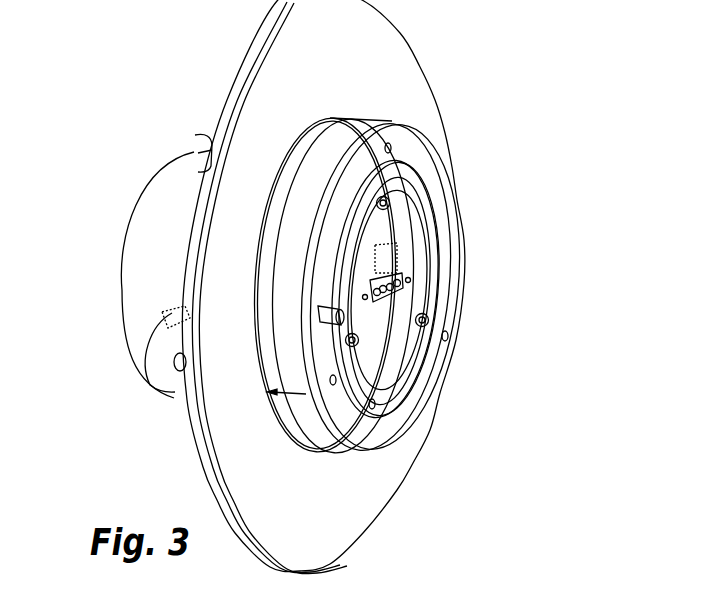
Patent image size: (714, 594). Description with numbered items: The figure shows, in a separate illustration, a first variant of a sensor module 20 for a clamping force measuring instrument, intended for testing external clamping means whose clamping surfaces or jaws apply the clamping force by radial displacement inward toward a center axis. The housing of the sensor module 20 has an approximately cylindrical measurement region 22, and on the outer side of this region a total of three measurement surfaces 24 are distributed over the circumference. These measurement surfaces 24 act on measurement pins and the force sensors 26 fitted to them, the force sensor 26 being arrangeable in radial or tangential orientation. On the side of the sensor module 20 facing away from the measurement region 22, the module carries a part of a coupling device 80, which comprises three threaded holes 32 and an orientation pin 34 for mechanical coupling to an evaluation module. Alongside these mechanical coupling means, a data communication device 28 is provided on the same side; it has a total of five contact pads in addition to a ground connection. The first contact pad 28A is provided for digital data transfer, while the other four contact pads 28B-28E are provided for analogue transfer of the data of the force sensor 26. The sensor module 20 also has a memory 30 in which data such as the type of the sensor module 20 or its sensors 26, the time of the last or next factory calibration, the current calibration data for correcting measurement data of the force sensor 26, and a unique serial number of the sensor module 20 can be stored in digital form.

The sensor module 20 is at (448, 50).
The measurement region 22 is at (166, 210).
The measurement surfaces 24 is at (197, 140).
The force sensor 26 is at (168, 322).
The data communication device 28 is at (410, 265).
The first contact pad 28A is at (410, 282).
The contact pads 28B-28E is at (402, 298).
The memory 30 is at (387, 260).
The threaded holes 32 is at (388, 147).
The orientation pin 34 is at (320, 320).
The coupling device 80 is at (462, 383).